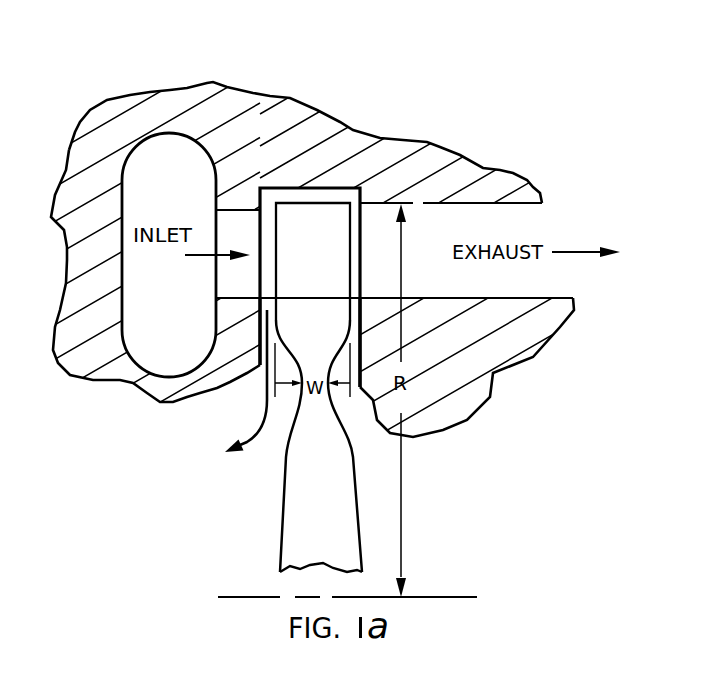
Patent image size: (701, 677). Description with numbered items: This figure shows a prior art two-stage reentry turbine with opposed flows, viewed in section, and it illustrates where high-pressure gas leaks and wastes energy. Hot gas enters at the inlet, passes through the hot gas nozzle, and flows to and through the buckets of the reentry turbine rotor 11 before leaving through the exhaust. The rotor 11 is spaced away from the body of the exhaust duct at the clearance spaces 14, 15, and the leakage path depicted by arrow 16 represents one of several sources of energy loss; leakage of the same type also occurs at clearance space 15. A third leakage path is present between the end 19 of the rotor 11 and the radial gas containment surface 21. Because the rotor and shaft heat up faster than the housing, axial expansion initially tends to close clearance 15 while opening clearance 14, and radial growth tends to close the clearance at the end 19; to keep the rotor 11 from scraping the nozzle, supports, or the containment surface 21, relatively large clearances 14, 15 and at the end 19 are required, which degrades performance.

The reentry turbine rotor 11 is at (292, 523).
The clearance space 14 is at (266, 258).
The clearance space 15 is at (355, 250).
The leakage path arrow 16 is at (268, 405).
The end of the rotor 19 is at (302, 205).
The radial gas containment surface 21 is at (277, 192).